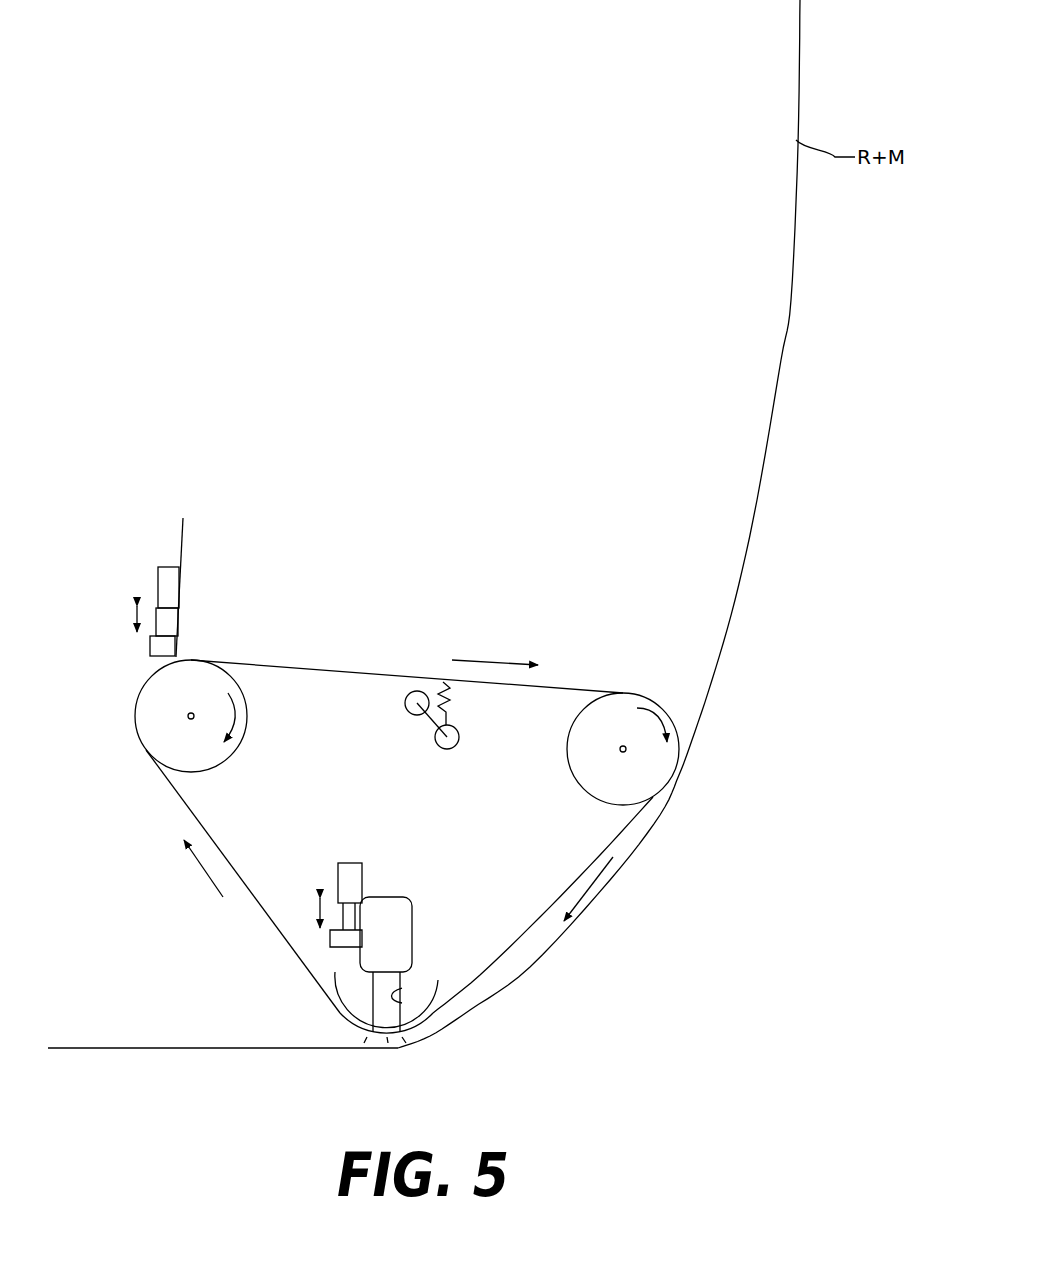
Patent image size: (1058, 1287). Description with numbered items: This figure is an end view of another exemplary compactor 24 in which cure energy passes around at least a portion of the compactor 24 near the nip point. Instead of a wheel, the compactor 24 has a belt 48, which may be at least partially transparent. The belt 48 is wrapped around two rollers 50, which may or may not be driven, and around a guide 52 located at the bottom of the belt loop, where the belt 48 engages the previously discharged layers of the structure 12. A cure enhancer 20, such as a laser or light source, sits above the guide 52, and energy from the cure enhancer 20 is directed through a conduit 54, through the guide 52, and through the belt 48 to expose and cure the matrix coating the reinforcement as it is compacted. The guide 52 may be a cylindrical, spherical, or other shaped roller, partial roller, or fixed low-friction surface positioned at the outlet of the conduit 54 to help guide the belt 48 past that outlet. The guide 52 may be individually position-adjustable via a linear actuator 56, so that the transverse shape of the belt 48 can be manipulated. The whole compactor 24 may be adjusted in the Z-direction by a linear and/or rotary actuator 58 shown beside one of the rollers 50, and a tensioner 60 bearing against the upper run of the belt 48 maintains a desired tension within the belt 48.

The structure 12 is at (100, 1047).
The cure enhancer 20 is at (397, 947).
The compactor 24 is at (802, 664).
The belt 48 is at (542, 915).
The roller 50 is at (201, 754).
The guide 52 is at (367, 1001).
The conduit 54 is at (402, 992).
The linear actuator 56 is at (352, 880).
The linear and/or rotary actuator 58 is at (165, 585).
The tensioner 60 is at (435, 722).